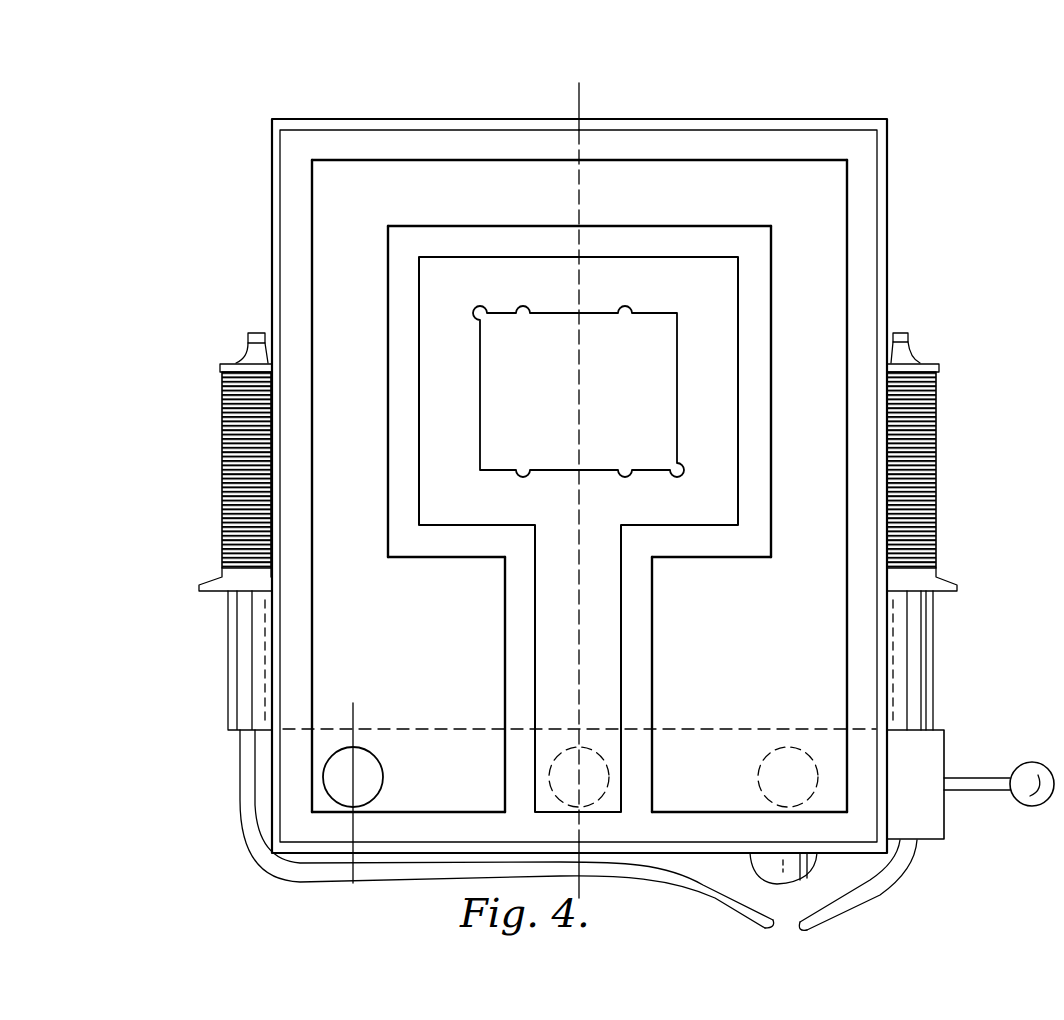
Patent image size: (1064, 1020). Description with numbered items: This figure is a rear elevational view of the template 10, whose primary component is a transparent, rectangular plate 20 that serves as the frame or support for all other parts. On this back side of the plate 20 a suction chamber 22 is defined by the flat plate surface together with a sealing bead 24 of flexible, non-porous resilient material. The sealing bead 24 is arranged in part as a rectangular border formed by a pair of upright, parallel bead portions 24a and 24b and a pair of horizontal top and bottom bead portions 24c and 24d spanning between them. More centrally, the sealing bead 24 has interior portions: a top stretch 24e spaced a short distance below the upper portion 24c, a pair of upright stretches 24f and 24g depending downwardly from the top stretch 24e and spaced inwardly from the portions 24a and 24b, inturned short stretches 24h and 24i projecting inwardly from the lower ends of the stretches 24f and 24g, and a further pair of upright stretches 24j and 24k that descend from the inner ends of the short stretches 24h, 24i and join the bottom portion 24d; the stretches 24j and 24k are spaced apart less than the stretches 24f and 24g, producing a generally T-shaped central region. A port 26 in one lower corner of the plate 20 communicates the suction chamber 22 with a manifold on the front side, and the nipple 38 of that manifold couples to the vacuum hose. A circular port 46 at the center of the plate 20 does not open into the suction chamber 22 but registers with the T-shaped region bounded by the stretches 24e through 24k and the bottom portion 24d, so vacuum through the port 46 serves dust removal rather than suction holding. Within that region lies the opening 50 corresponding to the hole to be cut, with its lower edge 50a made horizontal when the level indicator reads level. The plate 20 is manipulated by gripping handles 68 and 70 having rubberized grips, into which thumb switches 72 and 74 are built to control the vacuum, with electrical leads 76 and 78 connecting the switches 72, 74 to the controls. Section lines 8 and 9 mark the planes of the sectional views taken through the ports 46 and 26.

The template 10 is at (905, 148).
The plate 20 is at (888, 237).
The suction chamber 22 is at (522, 486).
The sealing bead 24 is at (838, 273).
The upright bead portion 24a is at (300, 508).
The upright bead portion 24b is at (848, 620).
The top bead portion 24c is at (440, 145).
The bottom bead portion 24d is at (437, 828).
The top stretch 24e is at (617, 233).
The upright stretch 24f is at (400, 380).
The upright stretch 24g is at (767, 415).
The inturned short stretch 24h is at (475, 557).
The inturned short stretch 24i is at (690, 545).
The upright stretch 24j is at (508, 688).
The upright stretch 24k is at (648, 683).
The port 26 is at (370, 763).
The nipple 38 is at (797, 745).
The circular port 46 is at (608, 758).
The opening 50 is at (645, 373).
The lower edge 50a is at (592, 470).
The gripping handle 68 is at (930, 495).
The gripping handle 70 is at (233, 478).
The thumb switch 72 is at (903, 333).
The thumb switch 74 is at (268, 335).
The electrical lead 76 is at (865, 887).
The electrical lead 78 is at (283, 876).
The section line 8- 8 is at (583, 83).
The section line 9- 9 is at (357, 703).